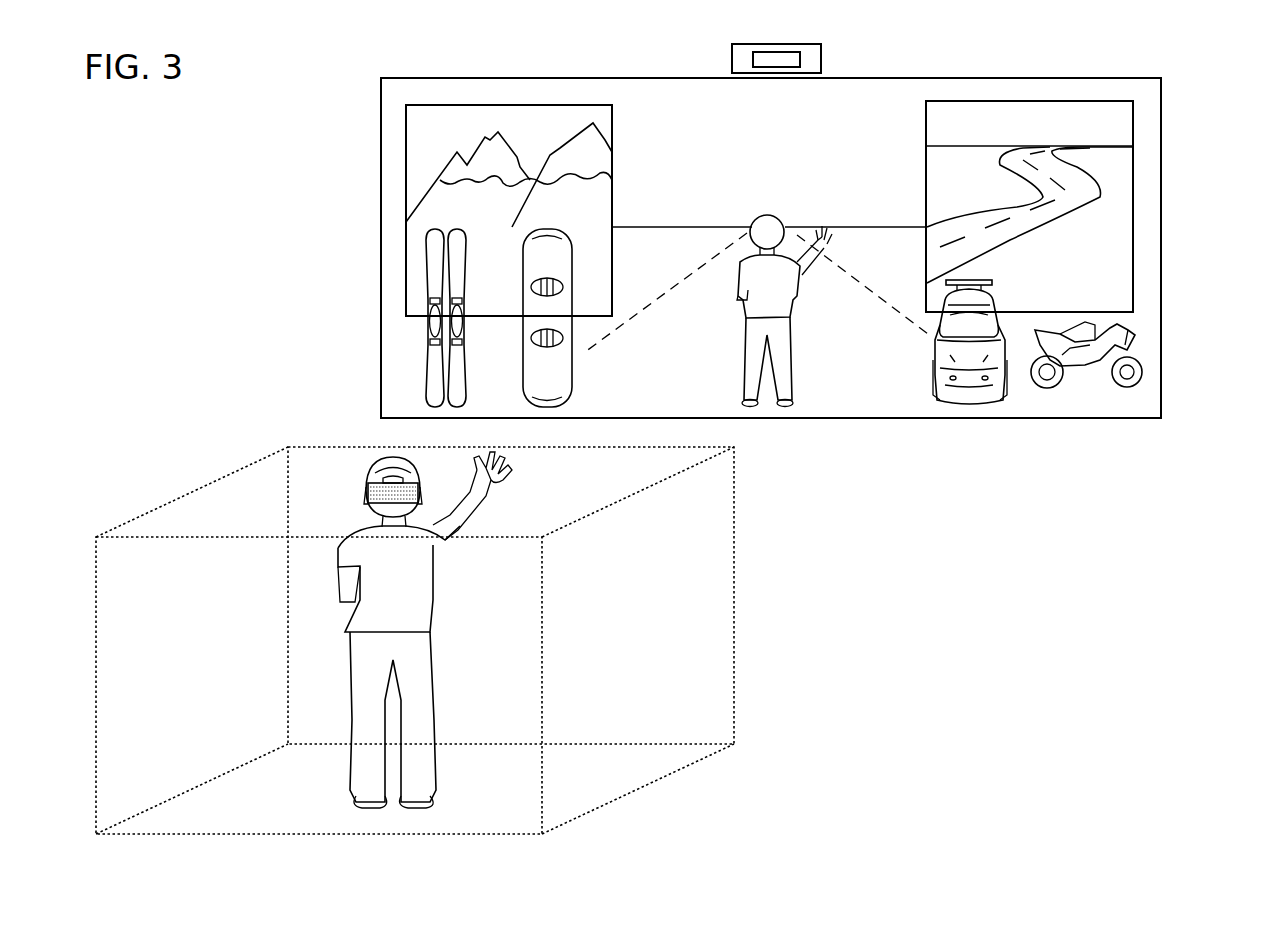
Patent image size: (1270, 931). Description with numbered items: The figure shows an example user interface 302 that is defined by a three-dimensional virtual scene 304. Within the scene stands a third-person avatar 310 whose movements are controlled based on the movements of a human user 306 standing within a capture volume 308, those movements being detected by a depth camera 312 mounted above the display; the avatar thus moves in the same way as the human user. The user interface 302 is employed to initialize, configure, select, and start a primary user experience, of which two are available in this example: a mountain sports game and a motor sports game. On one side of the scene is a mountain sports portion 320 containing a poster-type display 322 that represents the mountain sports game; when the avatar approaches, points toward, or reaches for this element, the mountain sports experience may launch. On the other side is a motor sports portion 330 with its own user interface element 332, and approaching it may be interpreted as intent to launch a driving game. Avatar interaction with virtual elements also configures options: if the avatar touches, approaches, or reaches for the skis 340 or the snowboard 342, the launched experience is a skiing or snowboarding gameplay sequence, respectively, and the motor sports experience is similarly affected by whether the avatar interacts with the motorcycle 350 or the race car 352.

The user interface 302 is at (897, 93).
The 3D virtual scene 304 is at (658, 93).
The human user 306 is at (425, 630).
The capture volume 308 is at (734, 563).
The third-person avatar 310 is at (758, 311).
The depth camera 312 is at (823, 58).
The mountain sports portion 320 is at (398, 128).
The poster-type display 322 is at (404, 206).
The motor sports portion 330 is at (1140, 122).
The user interface element 332 is at (1133, 214).
The skis 340 is at (425, 395).
The snowboard 342 is at (572, 395).
The motorcycle 350 is at (1143, 360).
The race car 352 is at (933, 366).